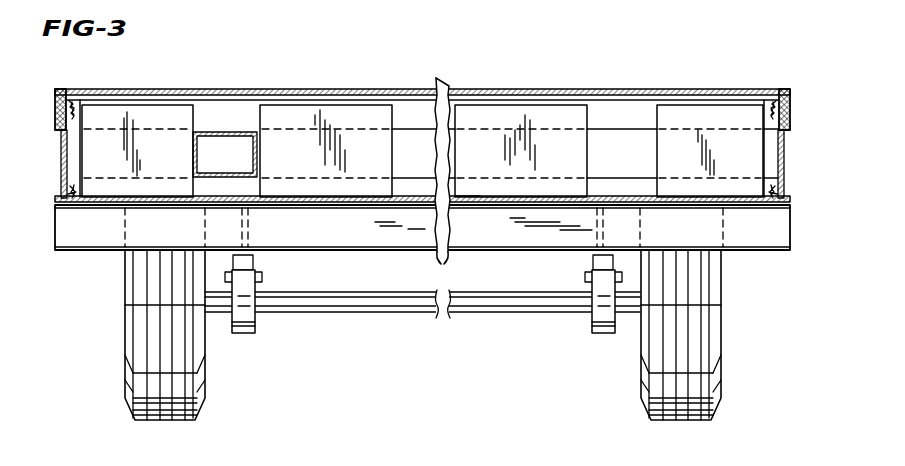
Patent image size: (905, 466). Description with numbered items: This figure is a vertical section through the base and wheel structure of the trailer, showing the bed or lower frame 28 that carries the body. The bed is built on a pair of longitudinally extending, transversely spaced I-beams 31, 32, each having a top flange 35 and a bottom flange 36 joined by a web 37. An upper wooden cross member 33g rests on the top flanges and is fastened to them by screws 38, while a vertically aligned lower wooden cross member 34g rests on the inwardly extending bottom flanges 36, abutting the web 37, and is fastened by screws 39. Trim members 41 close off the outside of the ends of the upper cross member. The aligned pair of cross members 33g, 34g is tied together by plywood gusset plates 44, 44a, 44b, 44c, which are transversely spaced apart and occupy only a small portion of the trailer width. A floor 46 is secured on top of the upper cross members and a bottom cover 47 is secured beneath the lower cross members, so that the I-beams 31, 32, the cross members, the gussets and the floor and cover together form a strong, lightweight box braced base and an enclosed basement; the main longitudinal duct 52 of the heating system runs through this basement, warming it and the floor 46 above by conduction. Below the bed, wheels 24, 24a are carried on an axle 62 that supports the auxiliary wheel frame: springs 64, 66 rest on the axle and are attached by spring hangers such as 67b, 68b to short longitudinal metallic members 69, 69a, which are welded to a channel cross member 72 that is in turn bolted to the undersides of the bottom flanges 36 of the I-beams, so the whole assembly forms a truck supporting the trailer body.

The wheel 24 is at (128, 355).
The complementary wheel 24a is at (718, 350).
The base structure 28 is at (609, 86).
The I-beam 31 is at (73, 158).
The I-beam 32 is at (771, 154).
The upper cross member 33g is at (248, 105).
The lower cross member 34g is at (213, 188).
The top flange 35 is at (58, 132).
The bottom flange 36 is at (60, 200).
The web 37 is at (62, 168).
The screw 38 is at (82, 99).
The screw 39 is at (92, 206).
The trim member 41 is at (58, 102).
The gusset plate 44 is at (157, 106).
The gusset plate 44a is at (362, 111).
The gusset plate 44b is at (508, 114).
The gusset plate 44c is at (684, 113).
The floor 46 is at (436, 79).
The bottom cover 47 is at (475, 204).
The main longitudinal duct 52 is at (221, 136).
The axle 62 is at (437, 322).
The spring 64 is at (600, 334).
The spring 66 is at (249, 334).
The spring hanger 67b is at (590, 262).
The roller bracket 68b is at (258, 262).
The longitudinally extending metallic member 69 is at (603, 231).
The longitudinally extending metallic member 69a is at (249, 221).
The cross member 72 is at (438, 262).